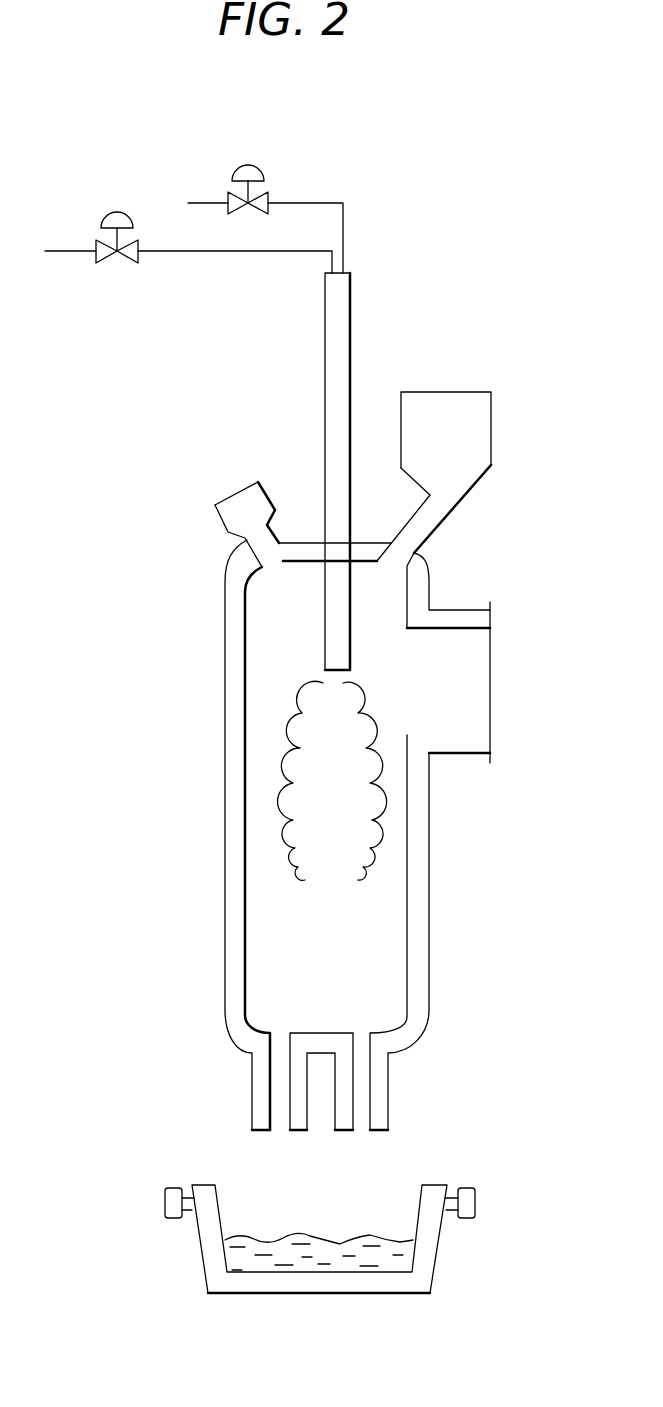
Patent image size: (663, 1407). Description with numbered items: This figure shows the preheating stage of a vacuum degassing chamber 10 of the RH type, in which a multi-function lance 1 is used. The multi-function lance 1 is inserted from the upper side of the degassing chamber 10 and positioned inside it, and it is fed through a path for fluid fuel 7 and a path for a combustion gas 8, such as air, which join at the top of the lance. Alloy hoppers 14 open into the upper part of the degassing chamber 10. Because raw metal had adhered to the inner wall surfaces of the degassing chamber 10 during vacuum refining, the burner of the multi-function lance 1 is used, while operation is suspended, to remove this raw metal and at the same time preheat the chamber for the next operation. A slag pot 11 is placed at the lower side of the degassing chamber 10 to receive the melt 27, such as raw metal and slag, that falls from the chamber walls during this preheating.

The multi-function lance 1 is at (338, 336).
The path for fluid fuel 7 is at (173, 253).
The path for a combustion gas 8 is at (313, 202).
The vacuum degassing chamber 10 is at (233, 747).
The slag pot 11 is at (208, 1228).
The alloy hopper 14 is at (476, 437).
The melt 27 is at (387, 1247).